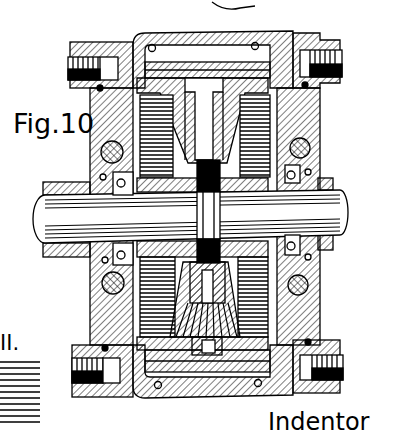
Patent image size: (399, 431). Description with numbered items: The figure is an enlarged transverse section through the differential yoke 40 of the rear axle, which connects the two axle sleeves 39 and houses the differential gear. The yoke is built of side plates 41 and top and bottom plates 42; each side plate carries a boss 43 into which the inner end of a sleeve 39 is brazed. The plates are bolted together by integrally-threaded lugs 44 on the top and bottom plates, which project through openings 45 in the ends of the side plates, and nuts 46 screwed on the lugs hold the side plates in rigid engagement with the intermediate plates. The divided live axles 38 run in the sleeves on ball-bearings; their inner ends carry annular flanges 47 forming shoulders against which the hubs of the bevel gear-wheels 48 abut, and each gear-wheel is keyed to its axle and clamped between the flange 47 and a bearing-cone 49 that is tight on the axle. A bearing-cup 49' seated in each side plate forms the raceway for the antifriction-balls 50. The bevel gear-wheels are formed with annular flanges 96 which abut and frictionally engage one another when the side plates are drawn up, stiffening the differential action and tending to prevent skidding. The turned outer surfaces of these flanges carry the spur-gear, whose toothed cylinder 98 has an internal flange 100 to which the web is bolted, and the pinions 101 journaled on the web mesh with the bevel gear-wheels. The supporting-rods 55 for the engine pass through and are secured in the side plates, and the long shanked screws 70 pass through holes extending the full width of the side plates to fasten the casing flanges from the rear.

The live axle 38 is at (45, 216).
The sleeve 39 is at (43, 185).
The differential yoke 40 is at (313, 132).
The side plate 41 is at (97, 298).
The top and bottom plate 42 is at (135, 36).
The boss 43 is at (78, 257).
The integrally-threaded lug 44 is at (70, 67).
The opening 45 is at (110, 387).
The nut 46 is at (87, 392).
The annular flange 47 is at (214, 210).
The bevel gear-wheel 48 is at (207, 216).
The bearing-cone 49 is at (129, 218).
The bearing-cup 49' is at (103, 219).
The antifriction-ball 50 is at (290, 183).
The supporting-rod 55 is at (110, 290).
The long shanked screw 70 is at (100, 176).
The annular flange 96 is at (207, 265).
The toothed cylinder 98 is at (222, 72).
The internal flange 100 is at (180, 66).
The pinion 101 is at (218, 117).